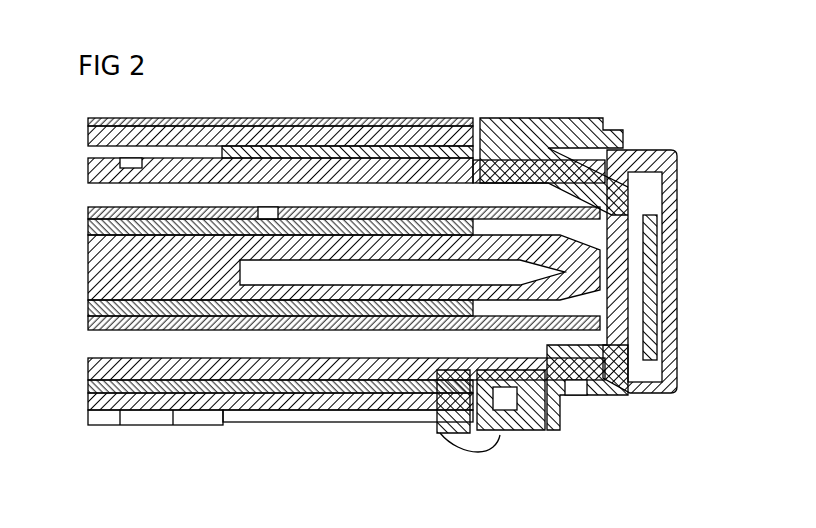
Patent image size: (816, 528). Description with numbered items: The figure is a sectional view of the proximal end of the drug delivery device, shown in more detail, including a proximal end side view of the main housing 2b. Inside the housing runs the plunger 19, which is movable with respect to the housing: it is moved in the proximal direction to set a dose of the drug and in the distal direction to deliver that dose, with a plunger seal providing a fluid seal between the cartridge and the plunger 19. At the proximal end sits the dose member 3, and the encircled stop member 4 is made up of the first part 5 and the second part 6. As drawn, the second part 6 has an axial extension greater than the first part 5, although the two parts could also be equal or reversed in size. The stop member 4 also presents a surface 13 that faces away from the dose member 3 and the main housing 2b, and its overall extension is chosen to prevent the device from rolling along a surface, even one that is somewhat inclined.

The main housing 2b is at (336, 424).
The dose member 3 is at (553, 117).
The stop member 4 is at (640, 400).
The first part 5 is at (447, 433).
The second part 6 is at (580, 420).
The surface 13 is at (373, 427).
The plunger 19 is at (106, 276).